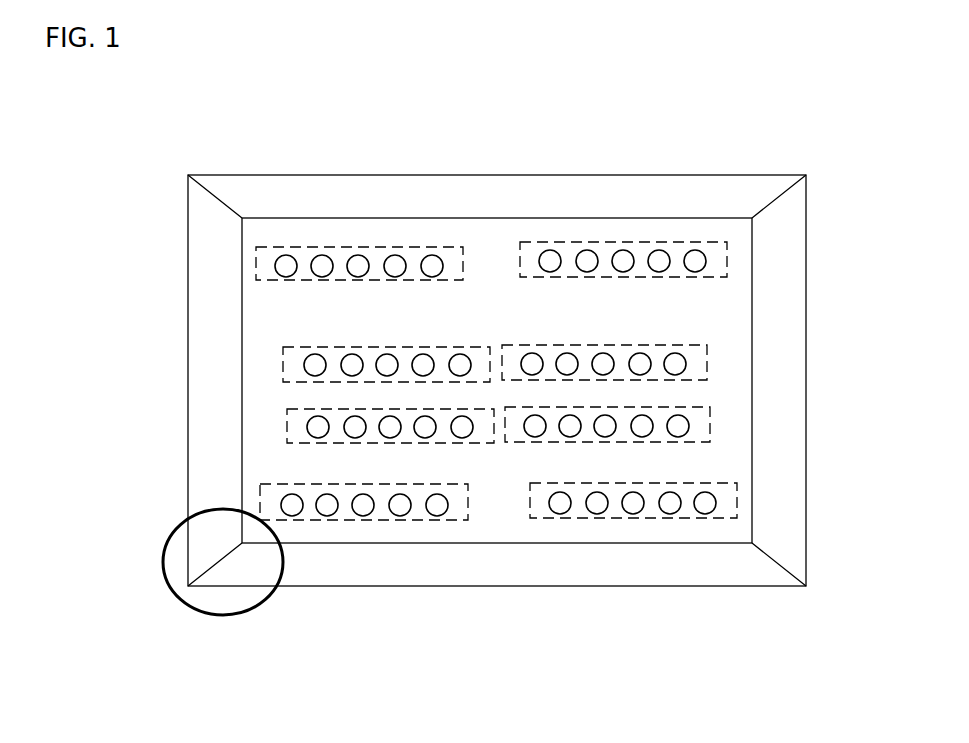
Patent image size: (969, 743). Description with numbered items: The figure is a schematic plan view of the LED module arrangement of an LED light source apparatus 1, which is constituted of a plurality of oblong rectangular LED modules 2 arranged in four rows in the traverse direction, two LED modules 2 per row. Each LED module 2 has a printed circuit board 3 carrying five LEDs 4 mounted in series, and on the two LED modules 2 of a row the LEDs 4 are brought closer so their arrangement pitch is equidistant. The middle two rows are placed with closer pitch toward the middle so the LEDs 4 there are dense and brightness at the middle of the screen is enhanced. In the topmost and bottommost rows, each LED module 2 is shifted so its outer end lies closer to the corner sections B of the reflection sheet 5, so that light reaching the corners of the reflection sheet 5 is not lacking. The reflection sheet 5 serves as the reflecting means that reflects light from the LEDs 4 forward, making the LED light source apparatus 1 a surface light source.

The LED light source apparatus 1 is at (480, 140).
The LED module 2 is at (492, 377).
The printed circuit board 3 is at (257, 253).
The LED 4 is at (285, 257).
The reflection sheet 5 is at (700, 175).
The corner section B is at (276, 614).